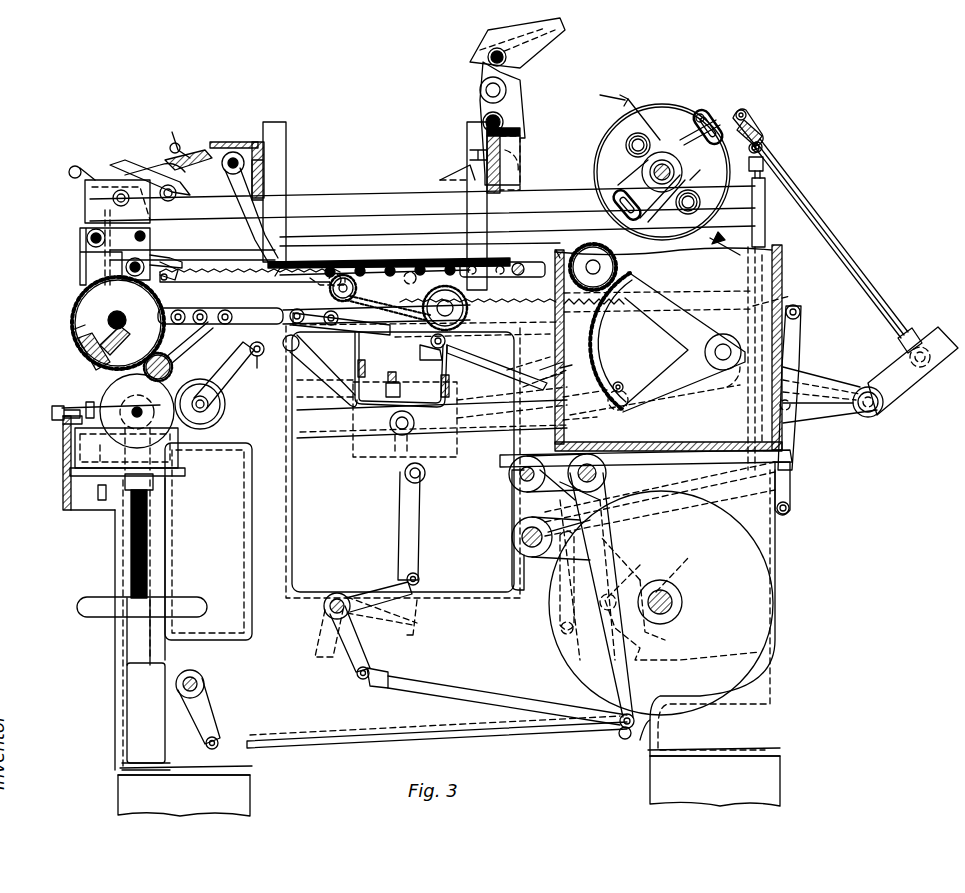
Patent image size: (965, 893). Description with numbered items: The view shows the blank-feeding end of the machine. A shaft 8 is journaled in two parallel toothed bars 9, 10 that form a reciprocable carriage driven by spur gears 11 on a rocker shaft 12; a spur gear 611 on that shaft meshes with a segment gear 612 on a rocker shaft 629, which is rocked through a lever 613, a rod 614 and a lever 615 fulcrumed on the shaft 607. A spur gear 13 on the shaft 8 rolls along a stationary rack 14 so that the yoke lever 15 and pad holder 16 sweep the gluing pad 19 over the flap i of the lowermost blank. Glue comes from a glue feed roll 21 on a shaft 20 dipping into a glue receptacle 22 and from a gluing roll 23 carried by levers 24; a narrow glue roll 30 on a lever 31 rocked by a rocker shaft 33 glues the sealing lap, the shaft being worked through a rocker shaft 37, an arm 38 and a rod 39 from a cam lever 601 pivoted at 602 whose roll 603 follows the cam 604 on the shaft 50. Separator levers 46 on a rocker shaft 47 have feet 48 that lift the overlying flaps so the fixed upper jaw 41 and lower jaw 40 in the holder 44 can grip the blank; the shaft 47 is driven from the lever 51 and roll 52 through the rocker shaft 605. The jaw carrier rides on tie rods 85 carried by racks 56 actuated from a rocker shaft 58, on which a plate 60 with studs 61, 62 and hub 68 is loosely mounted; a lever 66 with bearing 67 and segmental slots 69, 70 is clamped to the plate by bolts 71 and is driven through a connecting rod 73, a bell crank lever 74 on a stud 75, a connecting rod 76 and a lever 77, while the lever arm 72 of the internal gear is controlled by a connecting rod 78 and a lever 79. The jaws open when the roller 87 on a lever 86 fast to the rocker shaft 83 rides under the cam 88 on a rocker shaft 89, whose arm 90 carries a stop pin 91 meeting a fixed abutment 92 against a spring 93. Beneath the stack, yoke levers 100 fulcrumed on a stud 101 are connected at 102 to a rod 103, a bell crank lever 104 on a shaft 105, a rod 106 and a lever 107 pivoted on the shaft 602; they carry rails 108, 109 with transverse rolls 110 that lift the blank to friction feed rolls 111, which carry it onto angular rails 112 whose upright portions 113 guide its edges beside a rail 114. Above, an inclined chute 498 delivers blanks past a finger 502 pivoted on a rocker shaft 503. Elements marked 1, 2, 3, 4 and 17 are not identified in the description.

The roller plate 1 is at (430, 260).
The rollers 2 is at (372, 276).
The posts 3 is at (284, 135).
The plate 4 is at (485, 270).
The shaft 8 is at (107, 316).
The bar 9 is at (545, 305).
The bar 10 is at (266, 303).
The spur gear 11 is at (557, 239).
The rocker shaft 12 is at (602, 266).
The spur gear 13 is at (80, 290).
The stationary rack 14 is at (225, 275).
The yoke lever 15 is at (108, 334).
The pad holder 16 is at (72, 330).
The arrow 17 is at (728, 264).
The gluing pad 19 is at (82, 350).
The shaft 20 is at (148, 394).
The glue feed roll 21 is at (114, 397).
The glue receptacle 22 is at (178, 452).
The gluing roll 23 is at (171, 367).
The levers 24 is at (195, 340).
The narrow glue roll 30 is at (222, 412).
The lever 31 is at (236, 350).
The rocker shaft 33 is at (262, 362).
The rocker shaft 37 is at (192, 672).
The arm 38 is at (205, 705).
The rod 39 is at (244, 738).
The lower jaw 40 is at (175, 278).
The upper jaw 41 is at (178, 255).
The holder 44 is at (98, 244).
The separator lever 46 is at (248, 208).
The rocker shaft 47 is at (222, 172).
The foot 48 is at (281, 286).
The shaft 50 is at (672, 592).
The lever 51 is at (515, 494).
The roll 52 is at (556, 624).
The reciprocable racks 56 is at (372, 225).
The rocker shaft 58 is at (660, 160).
The plate 60 is at (600, 157).
The stud 61 is at (682, 212).
The stud 62 is at (640, 140).
The lever 66 is at (734, 118).
The bearing 67 is at (684, 180).
The hub 68 is at (645, 170).
The segmental slot 69 is at (612, 200).
The segmental slot 70 is at (706, 112).
The bolts 71 is at (694, 143).
The lever arm 72 is at (762, 136).
The connecting rod 73 is at (862, 262).
The bell crank lever 74 is at (905, 382).
The stud 75 is at (876, 414).
The connecting rod 76 is at (756, 416).
The lever 77 is at (772, 530).
The connecting rod 78 is at (767, 222).
The lever 79 is at (784, 518).
The rocker shaft 83 is at (127, 207).
The tie rods 85 is at (158, 236).
The lever 86 is at (85, 197).
The roller 87 is at (69, 172).
The cam 88 is at (122, 162).
The rocker shaft 89 is at (168, 200).
The arm 90 is at (155, 163).
The stop pin 91 is at (177, 132).
The fixed abutment 92 is at (192, 158).
The spring 93 is at (205, 145).
The yoke lever 100 is at (357, 410).
The stud 101 is at (626, 392).
The pivot 102 is at (392, 426).
The rod 103 is at (398, 488).
The bell crank lever 104 is at (388, 580).
The shaft 105 is at (337, 593).
The rod 106 is at (422, 684).
The lever 107 is at (626, 696).
The rails 108 is at (294, 336).
The rails 109 is at (490, 356).
The transverse rolls 110 is at (435, 347).
The friction feed rolls 111 is at (333, 290).
The angular rails 112 is at (557, 377).
The upright portions 113 is at (565, 355).
The rail 114 is at (394, 362).
The inclined chute 498 is at (535, 62).
The finger 502 is at (478, 135).
The rocker shaft 503 is at (503, 122).
The cam lever 601 is at (615, 668).
The pivot shaft 602 is at (606, 473).
The roll 603 is at (628, 615).
The cam 604 is at (570, 665).
The rocker shaft 605 is at (524, 470).
The stud 607 is at (522, 537).
The spur gear 611 is at (585, 246).
The segment gear 612 is at (604, 348).
The lever 613 is at (736, 384).
The rod 614 is at (800, 340).
The lever 615 is at (726, 484).
The rocker shaft 629 is at (716, 344).
The flap i is at (290, 265).